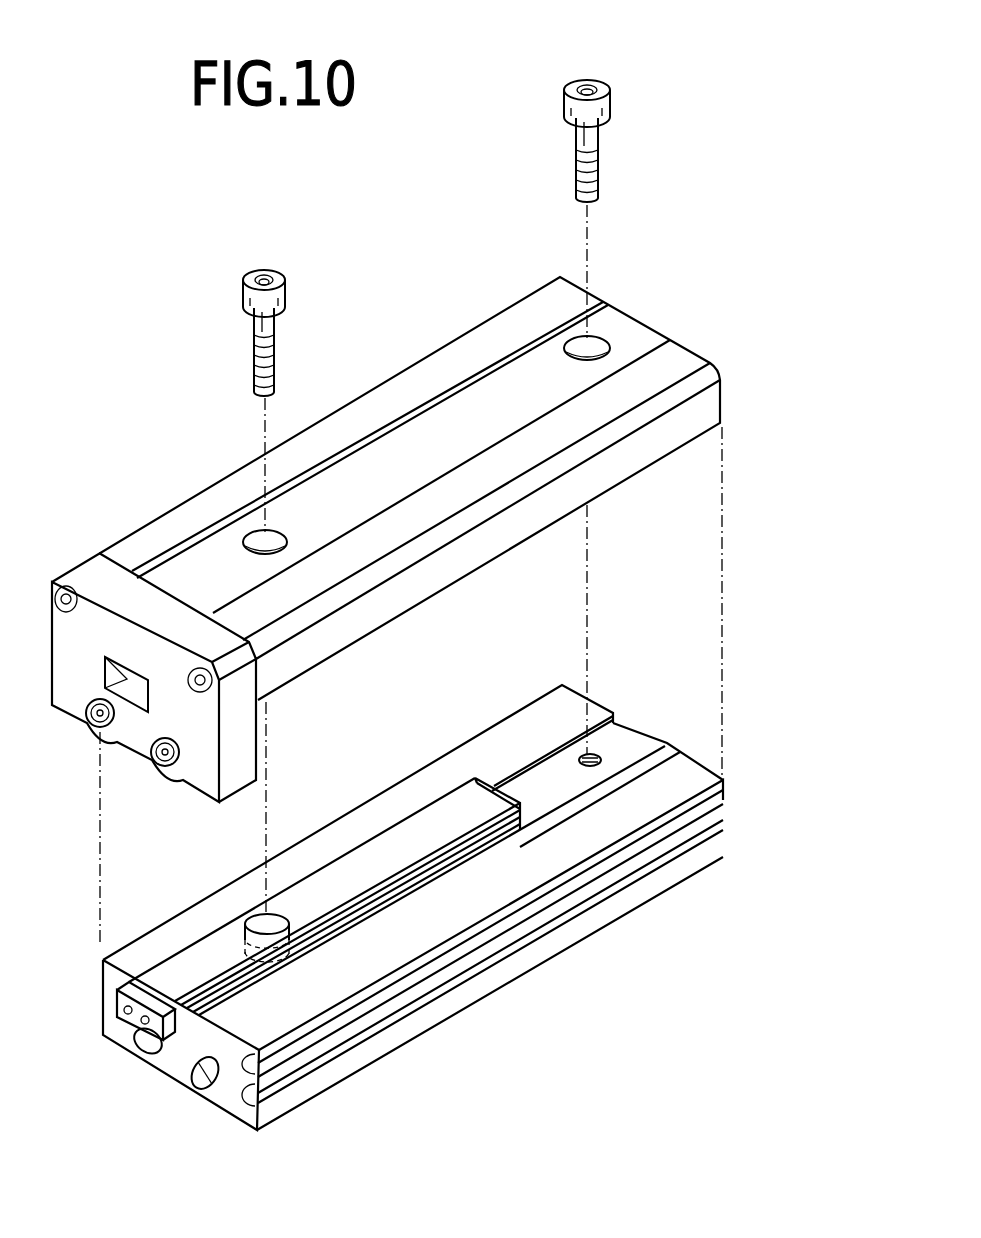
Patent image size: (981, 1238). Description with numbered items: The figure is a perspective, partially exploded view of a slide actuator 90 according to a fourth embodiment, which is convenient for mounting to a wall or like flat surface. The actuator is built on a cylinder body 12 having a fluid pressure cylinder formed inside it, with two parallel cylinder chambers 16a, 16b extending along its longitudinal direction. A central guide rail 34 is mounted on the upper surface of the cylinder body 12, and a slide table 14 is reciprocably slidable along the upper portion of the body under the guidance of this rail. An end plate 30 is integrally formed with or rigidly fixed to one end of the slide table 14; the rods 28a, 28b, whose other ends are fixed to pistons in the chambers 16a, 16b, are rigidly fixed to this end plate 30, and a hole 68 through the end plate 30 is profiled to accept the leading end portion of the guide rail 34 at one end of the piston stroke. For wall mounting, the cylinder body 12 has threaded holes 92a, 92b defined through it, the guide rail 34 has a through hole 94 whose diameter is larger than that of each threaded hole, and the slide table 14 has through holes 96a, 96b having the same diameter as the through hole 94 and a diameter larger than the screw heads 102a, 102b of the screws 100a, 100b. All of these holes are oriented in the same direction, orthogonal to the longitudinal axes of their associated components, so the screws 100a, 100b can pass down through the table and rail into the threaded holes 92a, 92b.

The slide actuator 90 is at (112, 407).
The slide table 14 is at (393, 445).
The end plate 30 is at (91, 612).
The cylinder body 12 is at (528, 870).
The guide rail 34 is at (450, 810).
The hole 68 is at (107, 678).
The rod 28a is at (97, 728).
The rod 28b is at (166, 768).
The cylinder chamber 16a is at (152, 1050).
The cylinder chamber 16b is at (205, 1080).
The threaded hole 92a is at (600, 758).
The threaded hole 92b is at (318, 1002).
The through hole 94 is at (263, 914).
The through hole 96a is at (605, 345).
The through hole 96b is at (250, 540).
The screw 100a is at (580, 138).
The screw 100b is at (252, 332).
The screw head 102a is at (600, 78).
The screw head 102b is at (264, 268).